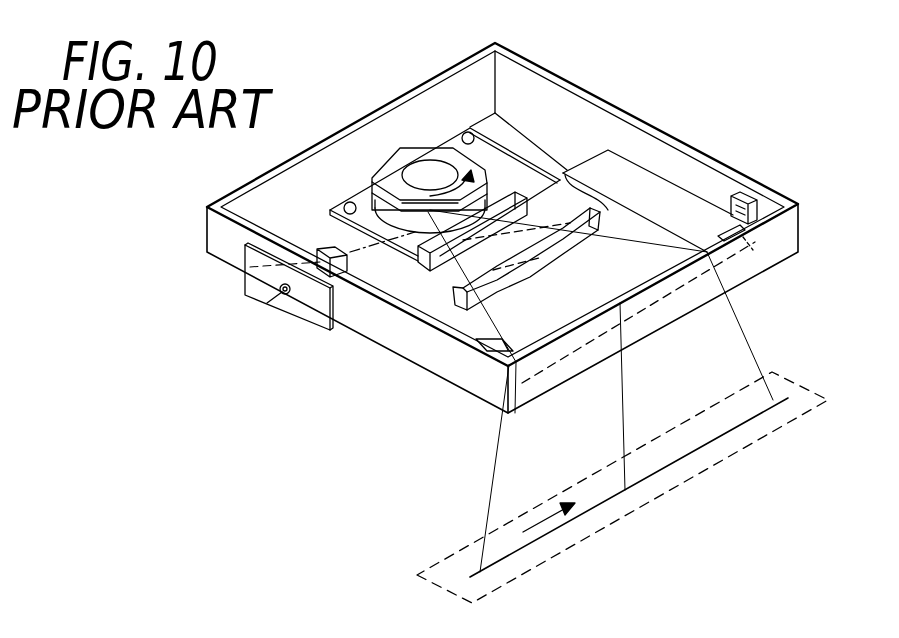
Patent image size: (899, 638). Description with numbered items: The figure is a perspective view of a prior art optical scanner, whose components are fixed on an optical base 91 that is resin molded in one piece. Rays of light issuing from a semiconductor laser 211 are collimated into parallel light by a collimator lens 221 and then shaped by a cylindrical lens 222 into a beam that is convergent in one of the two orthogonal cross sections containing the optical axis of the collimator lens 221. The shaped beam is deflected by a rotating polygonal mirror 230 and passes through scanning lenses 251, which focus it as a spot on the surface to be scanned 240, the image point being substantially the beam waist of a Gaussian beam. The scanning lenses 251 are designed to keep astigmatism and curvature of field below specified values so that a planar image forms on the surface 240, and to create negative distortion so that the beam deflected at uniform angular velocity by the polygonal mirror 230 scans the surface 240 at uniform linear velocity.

The optical base 91 is at (447, 105).
The rotating polygonal mirror 230 is at (403, 160).
The scanning lenses 251 is at (565, 172).
The cylindrical lens 222 is at (322, 250).
The collimator lens 221 is at (245, 267).
The semiconductor laser 211 is at (291, 300).
The surface to be scanned 240 is at (778, 375).